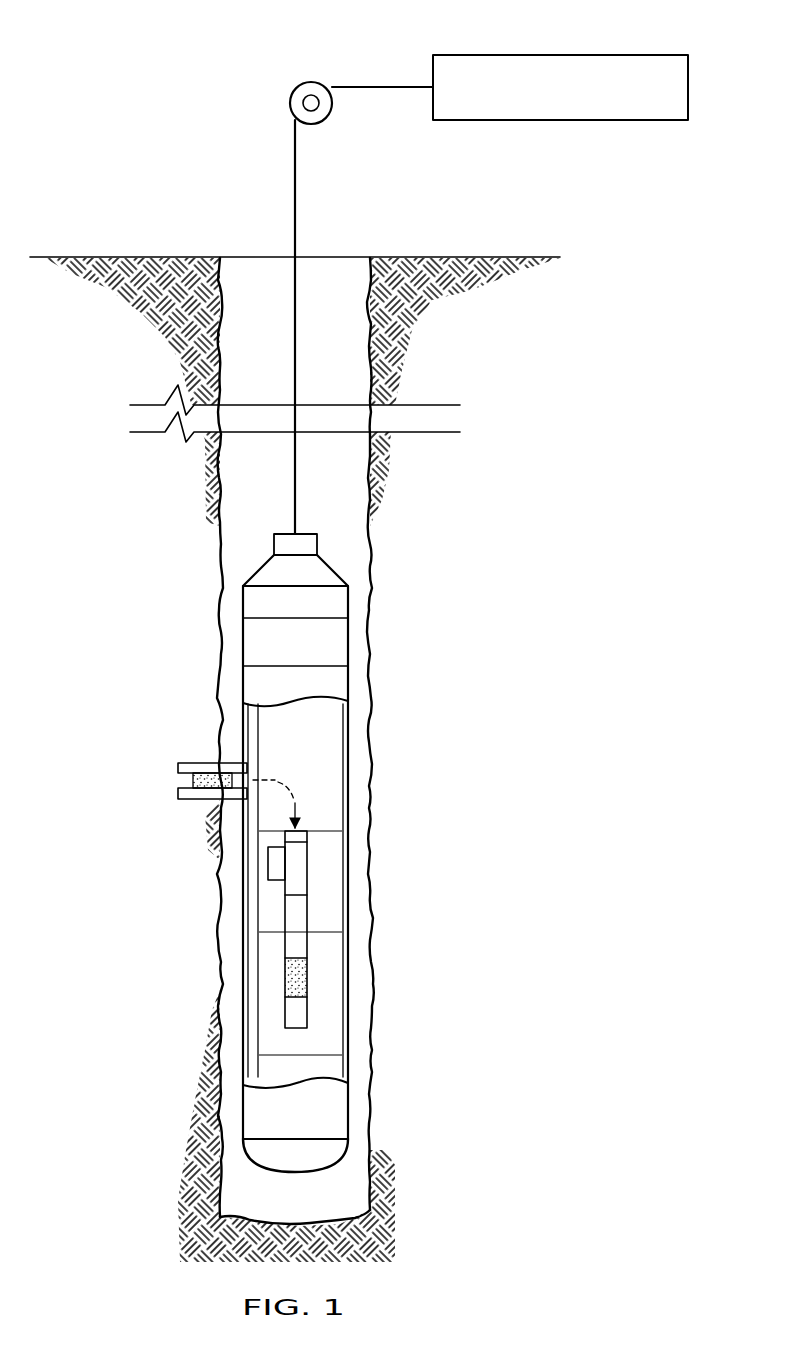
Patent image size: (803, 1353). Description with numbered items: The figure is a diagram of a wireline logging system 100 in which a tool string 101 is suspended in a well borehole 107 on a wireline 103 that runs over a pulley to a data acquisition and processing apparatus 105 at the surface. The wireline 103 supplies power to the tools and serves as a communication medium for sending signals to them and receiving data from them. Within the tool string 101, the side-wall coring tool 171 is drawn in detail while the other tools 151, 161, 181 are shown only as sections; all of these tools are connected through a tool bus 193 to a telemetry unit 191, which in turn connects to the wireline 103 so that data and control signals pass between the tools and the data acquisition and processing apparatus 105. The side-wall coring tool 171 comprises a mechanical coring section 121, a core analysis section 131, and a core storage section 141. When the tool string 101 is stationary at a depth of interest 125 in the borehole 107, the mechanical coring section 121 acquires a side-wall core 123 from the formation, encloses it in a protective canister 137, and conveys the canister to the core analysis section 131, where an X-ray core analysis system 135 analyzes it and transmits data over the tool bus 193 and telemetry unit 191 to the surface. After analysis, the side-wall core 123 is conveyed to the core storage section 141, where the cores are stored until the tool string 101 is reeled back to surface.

The wireline logging system 100 is at (125, 148).
The tool string 101 is at (349, 606).
The wireline 103 is at (294, 184).
The data acquisition and processing apparatus 105 is at (575, 55).
The well borehole 107 is at (370, 272).
The mechanical coring section 121 is at (318, 818).
The side-wall core 123 is at (192, 780).
The depth of interest 125 is at (165, 806).
The core analysis section 131 is at (323, 912).
The X-ray core analysis system 135 is at (268, 862).
The protective canister 137 is at (298, 866).
The core storage section 141 is at (323, 1008).
The tool 151 is at (333, 647).
The tool 161 is at (333, 683).
The side-wall coring tool 171 is at (348, 767).
The tool 181 is at (337, 1112).
The telemetry unit 191 is at (250, 608).
The tool bus 193 is at (243, 732).